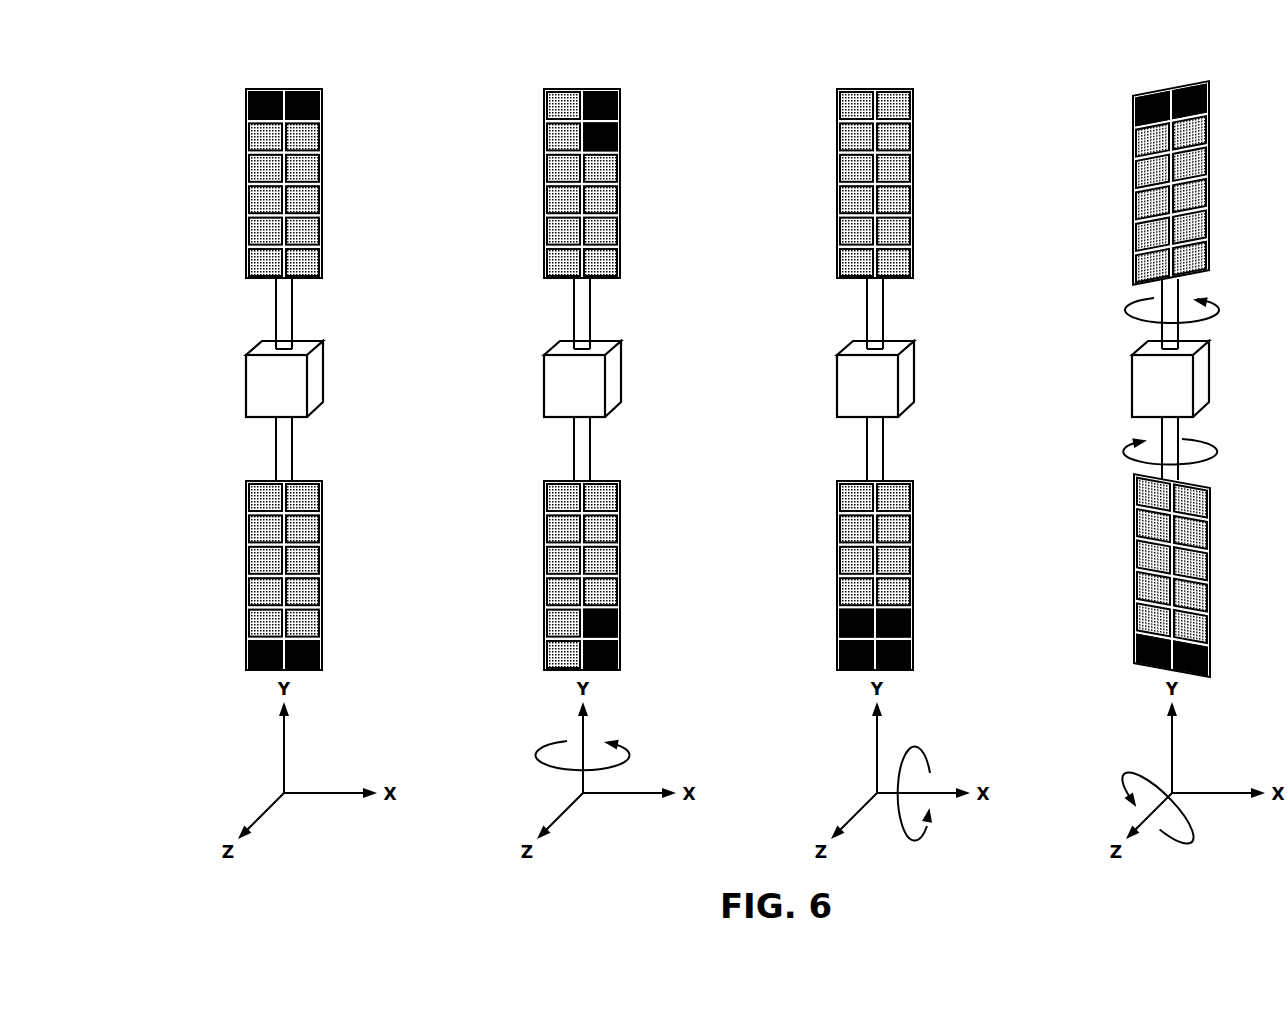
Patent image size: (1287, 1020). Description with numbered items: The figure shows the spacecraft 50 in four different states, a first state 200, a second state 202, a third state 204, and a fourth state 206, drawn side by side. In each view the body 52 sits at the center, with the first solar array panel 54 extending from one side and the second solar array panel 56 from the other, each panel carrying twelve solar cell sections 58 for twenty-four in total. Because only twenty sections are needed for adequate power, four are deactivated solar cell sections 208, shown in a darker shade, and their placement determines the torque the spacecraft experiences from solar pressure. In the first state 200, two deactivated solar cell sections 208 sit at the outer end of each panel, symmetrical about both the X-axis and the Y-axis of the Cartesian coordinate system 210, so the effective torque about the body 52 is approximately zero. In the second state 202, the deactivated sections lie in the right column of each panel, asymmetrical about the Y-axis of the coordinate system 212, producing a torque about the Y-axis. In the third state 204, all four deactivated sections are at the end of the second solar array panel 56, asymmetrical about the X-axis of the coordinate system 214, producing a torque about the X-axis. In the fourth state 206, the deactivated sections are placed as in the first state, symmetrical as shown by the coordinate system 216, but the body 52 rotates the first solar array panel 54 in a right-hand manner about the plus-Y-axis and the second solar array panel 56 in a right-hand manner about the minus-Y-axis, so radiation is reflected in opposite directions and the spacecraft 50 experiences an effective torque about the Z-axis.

The spacecraft 50 is at (1119, 428).
The body 52 is at (1198, 380).
The first solar array panel 54 is at (1135, 187).
The second solar array panel 56 is at (1133, 570).
The solar cell sections 58 is at (1235, 530).
The first state 200 is at (226, 76).
The second state 202 is at (524, 76).
The third state 204 is at (814, 76).
The fourth state 206 is at (1110, 76).
The deactivated solar cell sections 208 is at (1208, 653).
The Cartesian coordinate system 210 is at (230, 740).
The Cartesian coordinate system 212 is at (520, 740).
The Cartesian coordinate system 214 is at (810, 740).
The Cartesian coordinate system 216 is at (1118, 740).